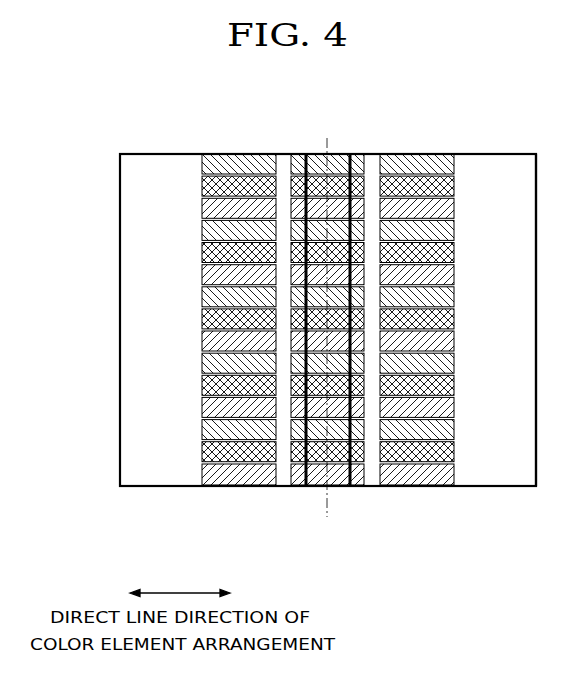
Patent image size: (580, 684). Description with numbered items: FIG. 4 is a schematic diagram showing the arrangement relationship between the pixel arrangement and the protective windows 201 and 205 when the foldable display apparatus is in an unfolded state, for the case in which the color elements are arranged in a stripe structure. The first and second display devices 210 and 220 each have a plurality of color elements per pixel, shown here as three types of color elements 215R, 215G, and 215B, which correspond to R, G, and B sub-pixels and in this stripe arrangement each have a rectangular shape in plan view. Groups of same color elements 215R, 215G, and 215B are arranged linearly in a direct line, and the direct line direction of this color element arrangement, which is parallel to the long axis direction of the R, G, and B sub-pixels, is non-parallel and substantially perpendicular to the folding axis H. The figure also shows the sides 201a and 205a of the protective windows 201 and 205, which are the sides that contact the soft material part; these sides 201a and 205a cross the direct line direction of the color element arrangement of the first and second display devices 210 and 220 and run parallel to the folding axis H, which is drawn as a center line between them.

The protective window 201 is at (157, 481).
The protective window 205 is at (504, 481).
The side of protective window 201a is at (310, 153).
The side of protective window 205a is at (341, 153).
The first display device 210 is at (164, 354).
The second display device 220 is at (417, 486).
The B color element 215B is at (203, 157).
The G color element 215G is at (203, 184).
The R color element 215R is at (203, 208).
The folding axis H is at (327, 506).